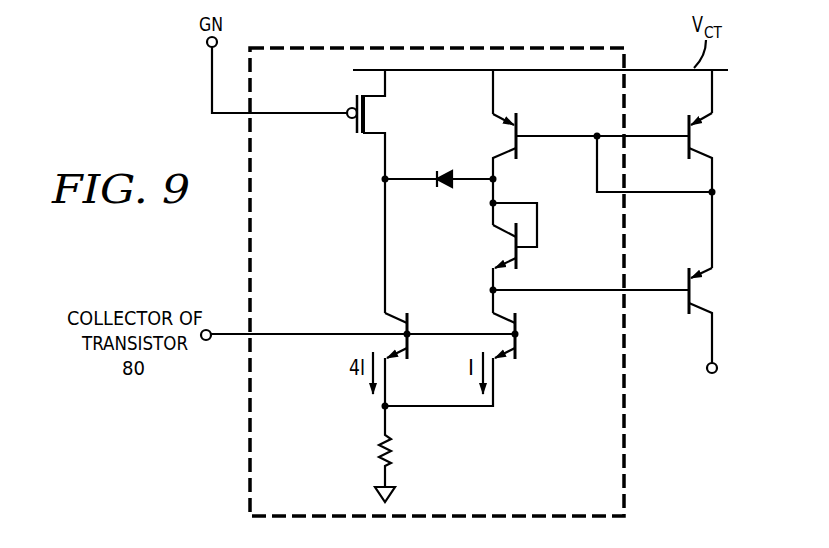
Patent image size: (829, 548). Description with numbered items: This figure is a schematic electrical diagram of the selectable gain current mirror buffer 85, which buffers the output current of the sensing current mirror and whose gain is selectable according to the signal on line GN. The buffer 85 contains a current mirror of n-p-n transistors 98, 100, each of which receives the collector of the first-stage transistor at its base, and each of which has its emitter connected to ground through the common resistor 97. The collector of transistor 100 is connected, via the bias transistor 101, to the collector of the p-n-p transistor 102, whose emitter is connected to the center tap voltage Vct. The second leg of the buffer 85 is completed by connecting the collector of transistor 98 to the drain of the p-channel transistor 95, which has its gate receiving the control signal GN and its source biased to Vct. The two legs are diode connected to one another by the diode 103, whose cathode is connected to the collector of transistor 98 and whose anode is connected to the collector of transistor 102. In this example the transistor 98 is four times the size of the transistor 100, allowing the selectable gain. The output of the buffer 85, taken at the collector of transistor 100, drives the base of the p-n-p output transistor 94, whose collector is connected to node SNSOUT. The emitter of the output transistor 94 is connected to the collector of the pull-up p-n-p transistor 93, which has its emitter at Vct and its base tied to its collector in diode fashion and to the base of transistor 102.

The variable gain current mirror buffer 85 is at (624, 448).
The pull-up p-n-p transistor 93 is at (688, 122).
The p-n-p output transistor 94 is at (688, 305).
The p-channel transistor 95 is at (348, 126).
The common resistor 97 is at (378, 452).
The n-p-n transistor 98 is at (410, 320).
The n-p-n transistor 100 is at (517, 350).
The bias transistor 101 is at (518, 262).
The p-n-p transistor 102 is at (518, 152).
The diode 103 is at (437, 170).